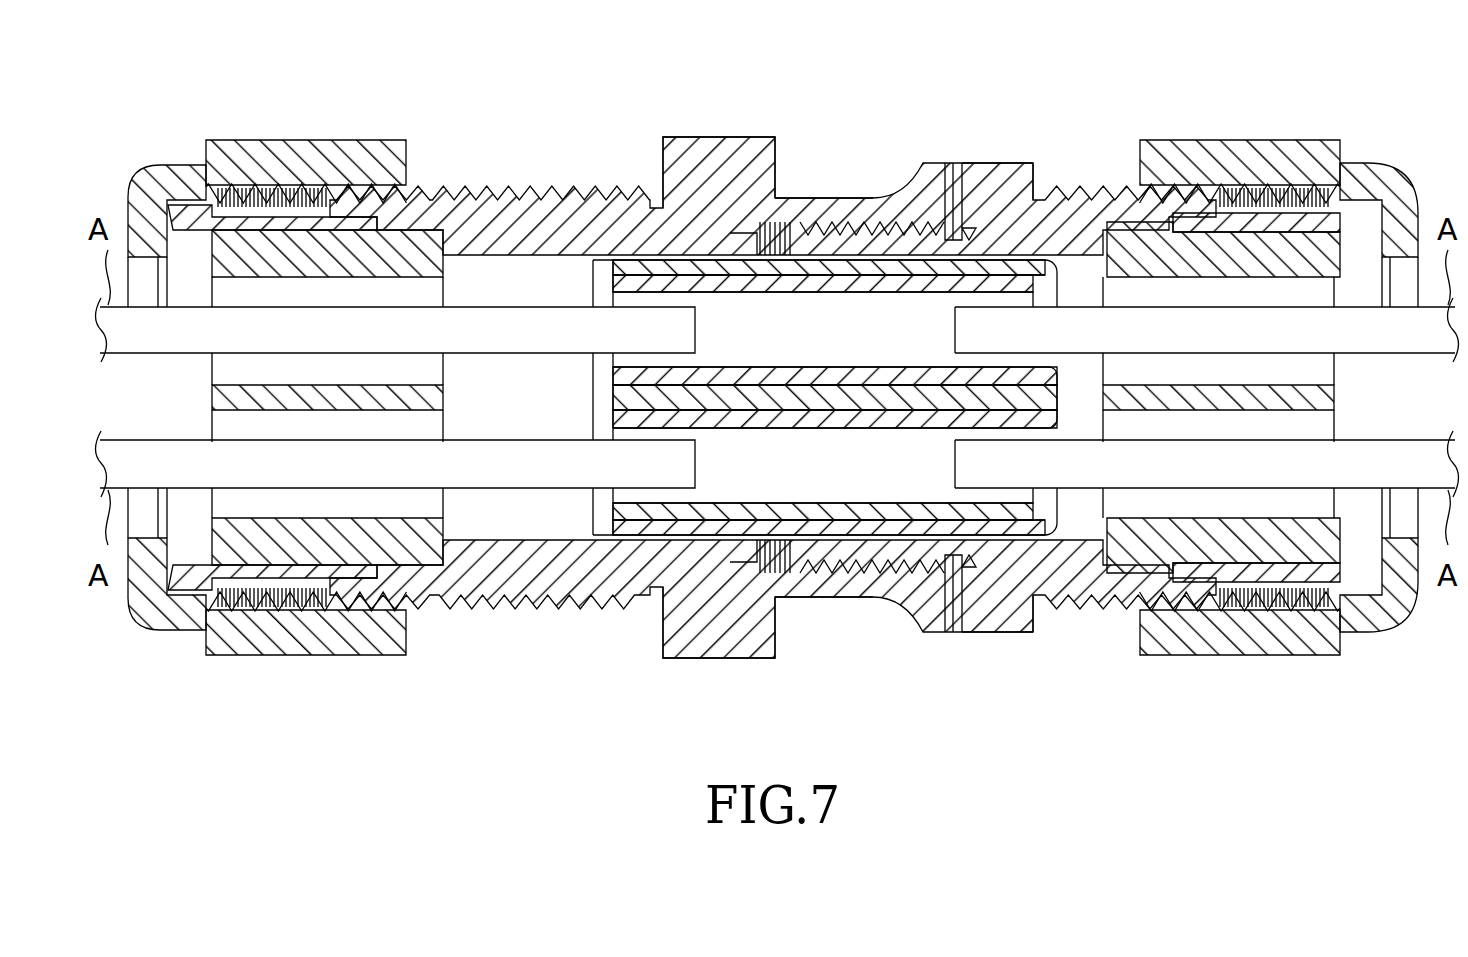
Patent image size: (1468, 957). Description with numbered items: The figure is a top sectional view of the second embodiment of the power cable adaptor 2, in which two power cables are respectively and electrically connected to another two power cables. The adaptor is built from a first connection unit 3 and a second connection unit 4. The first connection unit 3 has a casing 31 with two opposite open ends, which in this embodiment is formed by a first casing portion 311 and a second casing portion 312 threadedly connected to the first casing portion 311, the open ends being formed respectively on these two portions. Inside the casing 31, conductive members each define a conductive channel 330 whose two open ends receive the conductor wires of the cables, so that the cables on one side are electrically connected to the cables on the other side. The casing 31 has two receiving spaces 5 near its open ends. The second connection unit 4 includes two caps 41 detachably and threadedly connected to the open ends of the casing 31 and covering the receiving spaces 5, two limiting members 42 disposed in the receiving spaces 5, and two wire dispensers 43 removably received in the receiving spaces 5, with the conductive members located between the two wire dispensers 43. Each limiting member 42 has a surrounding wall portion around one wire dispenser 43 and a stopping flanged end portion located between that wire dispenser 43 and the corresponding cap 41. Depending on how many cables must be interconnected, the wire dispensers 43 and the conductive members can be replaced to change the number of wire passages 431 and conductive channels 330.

The power cable adaptor 2 is at (778, 363).
The first connection unit 3 is at (773, 374).
The casing 31 is at (892, 374).
The first casing portion 311 is at (1005, 627).
The second casing portion 312 is at (700, 137).
The conductive channel 330 is at (878, 540).
The second connection unit 4 is at (778, 374).
The cap 41 is at (312, 140).
The limiting member 42 is at (200, 165).
The wire dispenser 43 is at (754, 420).
The wire passage 431 is at (440, 292).
The receiving space 5 is at (448, 573).